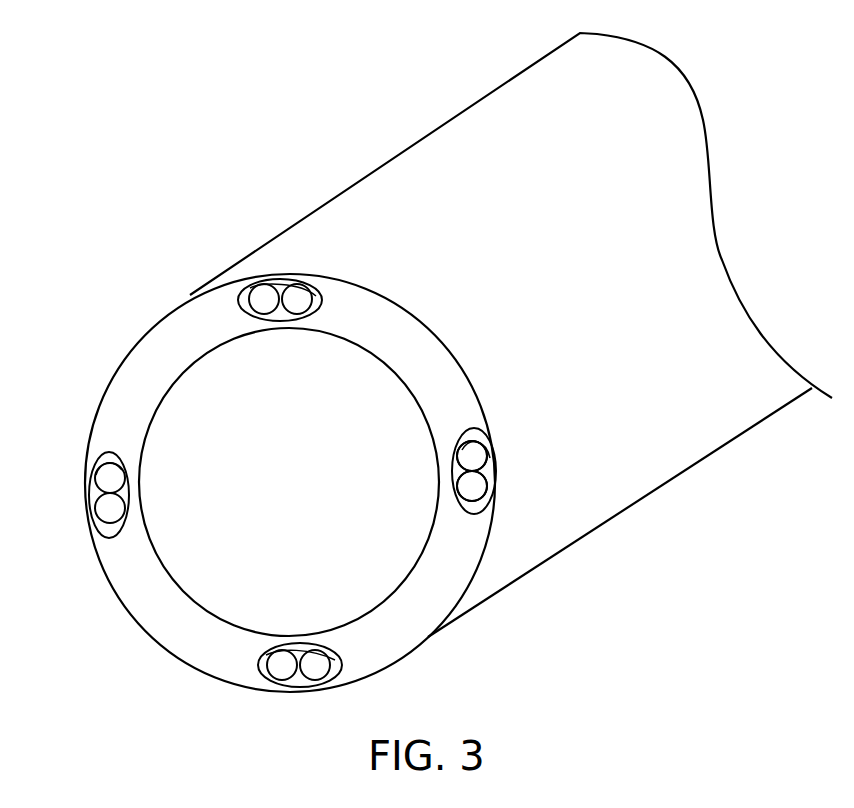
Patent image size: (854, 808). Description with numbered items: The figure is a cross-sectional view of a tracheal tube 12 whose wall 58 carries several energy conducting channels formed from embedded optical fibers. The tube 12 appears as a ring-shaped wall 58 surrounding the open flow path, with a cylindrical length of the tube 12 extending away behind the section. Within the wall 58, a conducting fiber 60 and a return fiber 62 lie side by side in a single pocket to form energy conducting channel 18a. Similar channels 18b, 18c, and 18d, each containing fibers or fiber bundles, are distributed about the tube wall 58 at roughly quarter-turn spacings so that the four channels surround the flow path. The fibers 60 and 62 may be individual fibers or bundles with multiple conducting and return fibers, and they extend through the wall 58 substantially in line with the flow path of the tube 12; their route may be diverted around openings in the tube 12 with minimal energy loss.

The tracheal tube 12 is at (435, 98).
The wall 58 is at (125, 380).
The energy conducting channel 18a is at (497, 434).
The energy conducting channel 18b is at (279, 274).
The energy conducting channel 18c is at (78, 517).
The energy conducting channel 18d is at (290, 696).
The conducting fiber 60 is at (481, 498).
The return fiber 62 is at (484, 466).